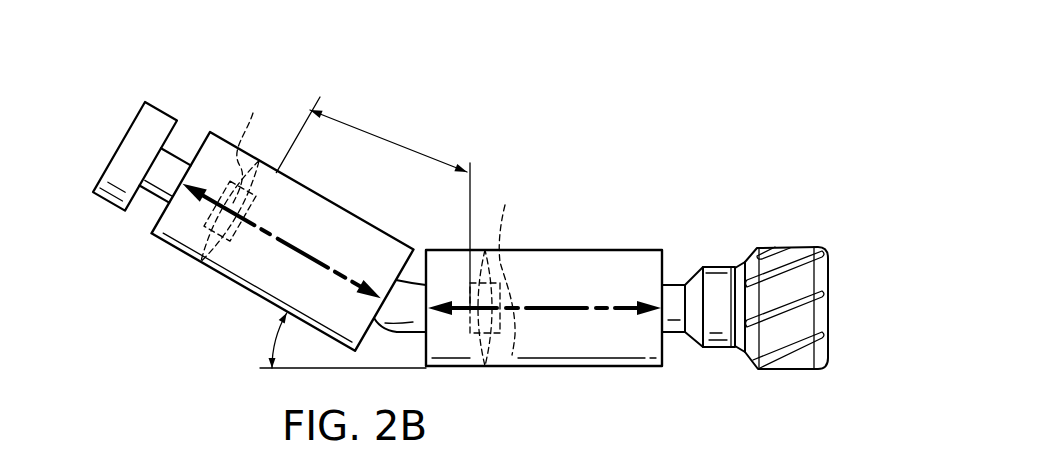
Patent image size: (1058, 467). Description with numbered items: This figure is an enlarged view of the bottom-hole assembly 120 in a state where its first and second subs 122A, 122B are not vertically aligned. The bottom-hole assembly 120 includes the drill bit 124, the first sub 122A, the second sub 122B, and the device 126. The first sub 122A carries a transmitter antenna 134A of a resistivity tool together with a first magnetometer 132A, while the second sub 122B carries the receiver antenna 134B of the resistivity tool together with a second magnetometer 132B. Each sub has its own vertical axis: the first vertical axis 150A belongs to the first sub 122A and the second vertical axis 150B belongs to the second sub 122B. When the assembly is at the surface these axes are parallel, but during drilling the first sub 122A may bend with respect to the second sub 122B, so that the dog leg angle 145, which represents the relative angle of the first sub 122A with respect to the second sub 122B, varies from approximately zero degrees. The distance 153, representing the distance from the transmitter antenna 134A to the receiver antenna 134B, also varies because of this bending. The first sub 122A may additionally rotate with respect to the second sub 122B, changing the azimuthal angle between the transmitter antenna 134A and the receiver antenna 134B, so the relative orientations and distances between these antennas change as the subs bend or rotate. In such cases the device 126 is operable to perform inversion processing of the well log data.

The bottom-hole assembly 120 is at (355, 63).
The first sub 122A is at (580, 374).
The second sub 122B is at (213, 283).
The drill bit 124 is at (829, 334).
The device 126 is at (158, 118).
The first magnetometer 132A is at (512, 355).
The second magnetometer 132B is at (214, 210).
The transmitter antenna 134A is at (509, 265).
The receiver antenna 134B is at (259, 144).
The dog leg angle α 145 is at (268, 338).
The first vertical axis 150A is at (543, 308).
The second vertical axis 150B is at (283, 238).
The distance D' 153 is at (390, 138).